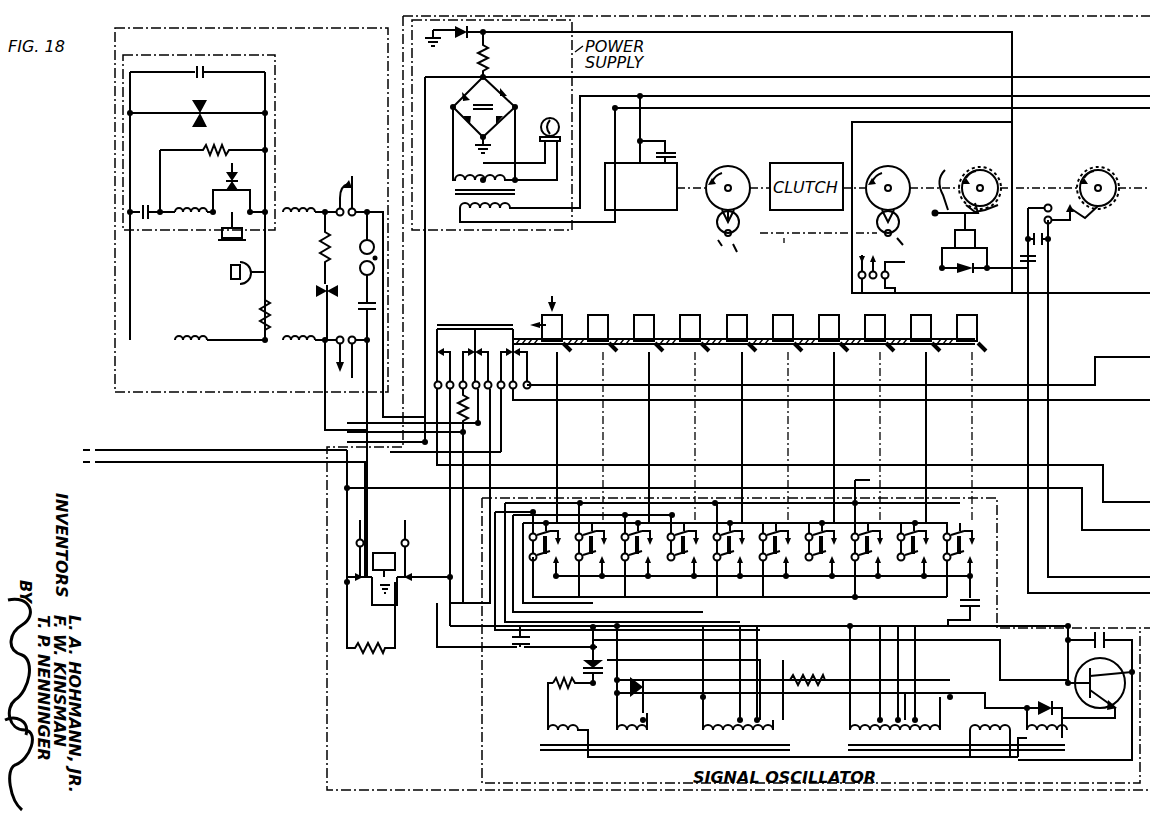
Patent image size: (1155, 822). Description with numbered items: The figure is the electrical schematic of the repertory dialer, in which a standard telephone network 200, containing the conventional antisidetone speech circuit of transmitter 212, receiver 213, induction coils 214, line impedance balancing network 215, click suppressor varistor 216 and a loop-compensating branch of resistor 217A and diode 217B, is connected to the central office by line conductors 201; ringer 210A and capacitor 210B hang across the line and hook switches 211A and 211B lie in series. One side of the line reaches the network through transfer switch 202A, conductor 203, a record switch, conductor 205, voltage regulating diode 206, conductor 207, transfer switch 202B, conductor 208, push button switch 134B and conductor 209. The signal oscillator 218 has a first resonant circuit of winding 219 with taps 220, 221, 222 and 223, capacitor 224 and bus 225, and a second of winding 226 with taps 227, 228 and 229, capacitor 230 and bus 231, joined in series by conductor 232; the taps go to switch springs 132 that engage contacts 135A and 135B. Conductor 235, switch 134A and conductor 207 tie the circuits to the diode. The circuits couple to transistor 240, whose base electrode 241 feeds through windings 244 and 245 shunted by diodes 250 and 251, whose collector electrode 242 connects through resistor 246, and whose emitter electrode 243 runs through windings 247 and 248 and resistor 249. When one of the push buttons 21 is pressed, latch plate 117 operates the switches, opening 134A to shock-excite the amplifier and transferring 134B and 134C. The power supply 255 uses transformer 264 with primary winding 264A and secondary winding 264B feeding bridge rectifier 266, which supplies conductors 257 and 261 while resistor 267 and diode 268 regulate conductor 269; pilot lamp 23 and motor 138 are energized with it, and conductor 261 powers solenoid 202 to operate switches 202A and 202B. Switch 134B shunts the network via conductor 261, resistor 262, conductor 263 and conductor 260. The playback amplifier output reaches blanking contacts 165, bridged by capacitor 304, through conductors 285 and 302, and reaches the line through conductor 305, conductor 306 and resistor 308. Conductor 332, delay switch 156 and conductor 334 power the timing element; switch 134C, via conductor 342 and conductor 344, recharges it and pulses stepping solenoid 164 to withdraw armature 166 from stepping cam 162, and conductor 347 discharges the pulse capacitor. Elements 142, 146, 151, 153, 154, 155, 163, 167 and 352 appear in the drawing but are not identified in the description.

The push buttons 21 is at (795, 312).
The pilot lamp 23 is at (550, 117).
The latch plate 117 is at (616, 338).
The switch springs 132 is at (978, 553).
The push button switch 134A is at (455, 307).
The push button switch 134B is at (487, 312).
The switch 134C is at (515, 322).
The contacts 135A is at (764, 566).
The contacts 135B is at (840, 500).
The motor 138 is at (630, 210).
The drive wheel 142 is at (720, 167).
The wheel 146 is at (885, 167).
The link 151 is at (712, 221).
The clutch assembly 153 is at (795, 243).
The cam 154 is at (732, 248).
The cam 155 is at (899, 244).
The delay switch 156 is at (858, 262).
The stepping cam 162 is at (985, 168).
The ratchet wheel 163 is at (1098, 167).
The stepping solenoid 164 is at (980, 226).
The blanking contacts 165 is at (1068, 224).
The armature 166 is at (945, 218).
The pawl 167 is at (945, 172).
The standard telephone network 200 is at (113, 251).
The telephone line conductors 201 is at (262, 460).
The solenoid 202 is at (400, 568).
The transfer switch 202A is at (345, 580).
The transfer switch 202B is at (410, 586).
The conductor 203 is at (345, 504).
The conductor 205 is at (982, 640).
The voltage regulating diode 206 is at (583, 666).
The conductor 207 is at (430, 466).
The conductor 208 is at (495, 450).
The conductor 209 is at (392, 292).
The telephone ringer 210A is at (352, 276).
The capacitor 210B is at (344, 312).
The hook switch 211A is at (336, 186).
The hook switch 211B is at (332, 366).
The transmitter 212 is at (232, 276).
The receiver 213 is at (226, 240).
The induction coils 214 is at (190, 218).
The line impedance balancing network 215 is at (278, 113).
The click suppressor varistor 216 is at (222, 178).
The resistor 217A is at (318, 257).
The diode 217B is at (268, 313).
The signal oscillator 218 is at (478, 705).
The winding 219 is at (895, 738).
The tap 220 is at (850, 660).
The tap 221 is at (875, 650).
The tap 222 is at (925, 680).
The tap 223 is at (905, 680).
The capacitor 224 is at (985, 603).
The bus 225 is at (940, 580).
The winding 226 is at (715, 738).
The tap 227 is at (700, 653).
The tap 228 is at (719, 663).
The tap 229 is at (770, 722).
The capacitor 230 is at (517, 650).
The bus 231 is at (905, 530).
The conductor 232 is at (845, 715).
The conductor 235 is at (468, 650).
The transistor 240 is at (1108, 700).
The base electrode 241 is at (1103, 708).
The collector electrode 242 is at (1065, 678).
The emitter electrode 243 is at (1120, 665).
The winding 244 is at (1045, 742).
The winding 245 is at (630, 738).
The resistor 246 is at (812, 677).
The winding 247 is at (990, 740).
The winding 248 is at (558, 737).
The resistor 249 is at (553, 688).
The diode 250 is at (1035, 705).
The diode 251 is at (645, 688).
The power supply 255 is at (494, 232).
The conductor 257 is at (703, 77).
The conductor 260 is at (1140, 598).
The conductor 261 is at (322, 415).
The resistor 262 is at (468, 405).
The conductor 263 is at (468, 434).
The transformer 264 is at (458, 196).
The primary winding 264A is at (510, 206).
The secondary winding 264B is at (482, 145).
The full wave bridge rectifier 266 is at (517, 98).
The resistor 267 is at (490, 50).
The diode 268 is at (455, 40).
The conductor 269 is at (900, 36).
The conductor 285 is at (1026, 305).
The conductor 302 is at (1080, 578).
The capacitor 304 is at (1052, 242).
The conductor 305 is at (525, 495).
The conductor 306 is at (370, 595).
The resistor 308 is at (362, 652).
The conductor 332 is at (852, 136).
The conductor 334 is at (918, 294).
The conductor 342 is at (748, 401).
The conductor 344 is at (482, 420).
The conductor 347 is at (1060, 385).
The conductor 352 is at (1065, 275).